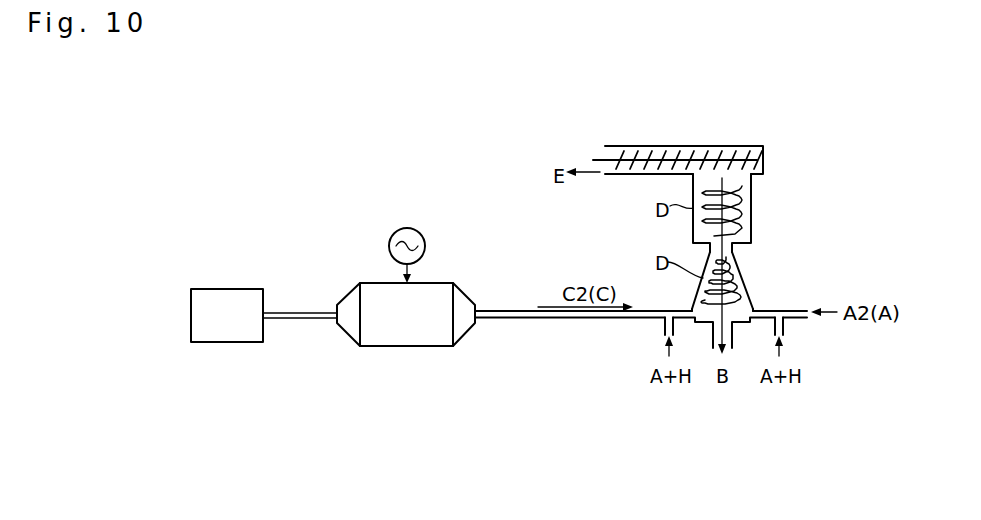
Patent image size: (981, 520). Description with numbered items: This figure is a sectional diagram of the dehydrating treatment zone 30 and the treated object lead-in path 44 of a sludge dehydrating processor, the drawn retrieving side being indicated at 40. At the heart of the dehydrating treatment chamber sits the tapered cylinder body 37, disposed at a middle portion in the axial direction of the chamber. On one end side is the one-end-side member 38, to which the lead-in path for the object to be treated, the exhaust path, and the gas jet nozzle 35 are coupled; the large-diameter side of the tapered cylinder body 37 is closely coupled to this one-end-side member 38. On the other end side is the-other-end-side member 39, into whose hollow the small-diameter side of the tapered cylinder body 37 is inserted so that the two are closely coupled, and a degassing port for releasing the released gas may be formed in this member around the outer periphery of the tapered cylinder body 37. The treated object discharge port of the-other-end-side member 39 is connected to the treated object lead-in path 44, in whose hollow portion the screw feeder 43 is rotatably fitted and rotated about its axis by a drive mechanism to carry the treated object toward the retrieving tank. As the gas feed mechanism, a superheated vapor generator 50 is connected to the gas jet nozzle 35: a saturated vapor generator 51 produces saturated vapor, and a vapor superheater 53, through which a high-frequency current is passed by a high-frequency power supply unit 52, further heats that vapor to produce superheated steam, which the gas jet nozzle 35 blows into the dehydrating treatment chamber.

The dehydrating treatment zone 30 is at (838, 213).
The gas jet nozzle 35 is at (662, 320).
The tapered cylinder body 37 is at (740, 268).
The one-end-side member 38 is at (752, 306).
The the-other-end-side member 39 is at (751, 196).
The collection unit 40 is at (520, 146).
The screw feeder 43 is at (596, 159).
The treated object lead-in path 44 is at (763, 147).
The superheated vapor generator 50 is at (292, 207).
The saturated vapor generator 51 is at (224, 289).
The high-frequency power supply unit 52 is at (389, 246).
The vapor superheater 53 is at (445, 283).